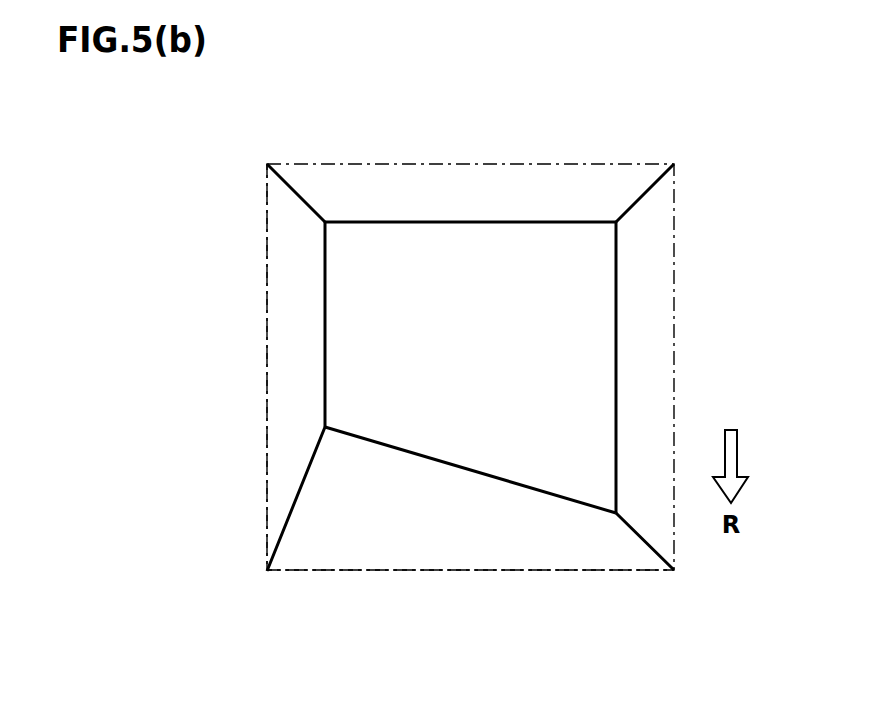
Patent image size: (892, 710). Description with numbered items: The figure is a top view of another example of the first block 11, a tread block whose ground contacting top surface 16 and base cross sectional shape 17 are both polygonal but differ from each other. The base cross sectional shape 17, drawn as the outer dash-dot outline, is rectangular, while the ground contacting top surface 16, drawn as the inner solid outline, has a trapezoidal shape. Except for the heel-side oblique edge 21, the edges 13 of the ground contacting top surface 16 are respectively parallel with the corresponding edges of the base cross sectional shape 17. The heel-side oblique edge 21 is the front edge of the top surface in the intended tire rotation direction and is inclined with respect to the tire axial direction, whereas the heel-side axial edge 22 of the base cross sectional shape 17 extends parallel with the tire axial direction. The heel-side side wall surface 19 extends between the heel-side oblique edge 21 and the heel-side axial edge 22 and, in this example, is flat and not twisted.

The first block 11 is at (356, 158).
The edges of the ground contacting top surface 13 is at (325, 375).
The ground contacting top surface 16 is at (544, 280).
The base cross sectional shape 17 is at (184, 367).
The heel-side side wall surface 19 is at (389, 508).
The heel-side oblique edge 21 is at (477, 470).
The heel-side axial edge 22 is at (582, 572).